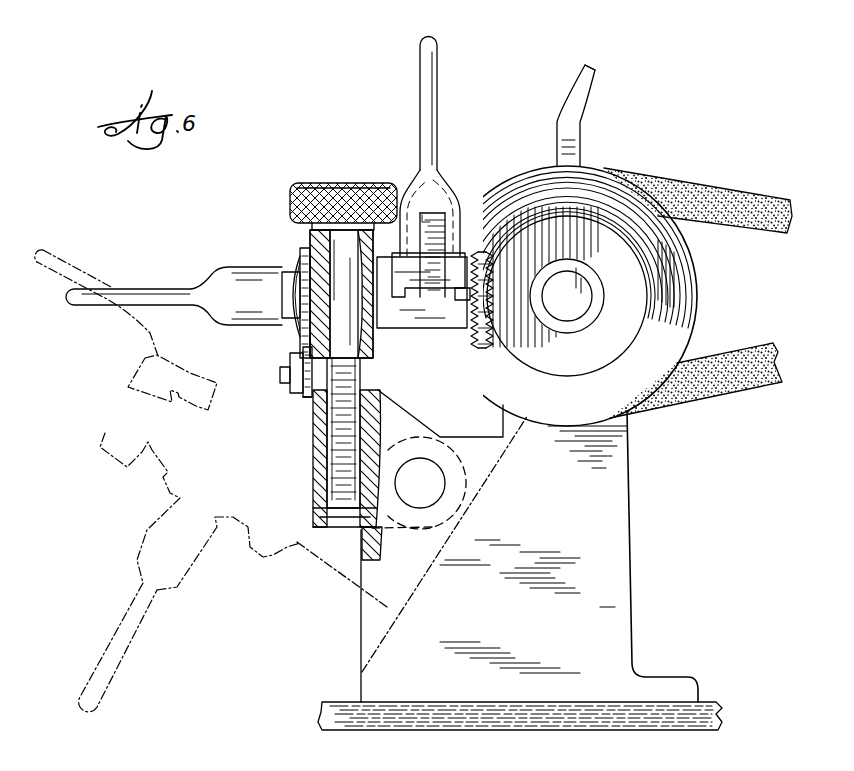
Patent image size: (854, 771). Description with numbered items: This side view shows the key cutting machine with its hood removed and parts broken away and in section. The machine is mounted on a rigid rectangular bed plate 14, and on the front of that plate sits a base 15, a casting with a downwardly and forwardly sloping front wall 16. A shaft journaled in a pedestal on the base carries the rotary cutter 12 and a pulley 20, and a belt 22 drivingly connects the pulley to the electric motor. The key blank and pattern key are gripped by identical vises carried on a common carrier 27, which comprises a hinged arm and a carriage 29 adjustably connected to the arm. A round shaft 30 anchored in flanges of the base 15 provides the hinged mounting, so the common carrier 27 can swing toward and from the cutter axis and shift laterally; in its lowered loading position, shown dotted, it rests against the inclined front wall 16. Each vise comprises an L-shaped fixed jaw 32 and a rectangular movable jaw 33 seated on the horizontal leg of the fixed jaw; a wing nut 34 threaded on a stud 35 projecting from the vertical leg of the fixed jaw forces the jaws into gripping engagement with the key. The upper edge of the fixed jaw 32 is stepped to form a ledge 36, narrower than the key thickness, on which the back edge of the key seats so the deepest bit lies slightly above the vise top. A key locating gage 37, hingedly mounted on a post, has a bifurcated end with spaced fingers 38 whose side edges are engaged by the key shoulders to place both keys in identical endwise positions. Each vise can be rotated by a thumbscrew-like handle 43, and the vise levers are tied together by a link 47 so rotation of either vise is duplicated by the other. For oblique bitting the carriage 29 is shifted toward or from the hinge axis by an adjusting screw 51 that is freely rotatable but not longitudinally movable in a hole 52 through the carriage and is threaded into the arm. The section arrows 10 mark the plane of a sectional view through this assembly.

The section line / viewing direction 10 is at (393, 23).
The rotary cutter 12 is at (482, 333).
The bed plate 14 is at (699, 714).
The base 15 is at (592, 506).
The front wall 16 is at (390, 620).
The pulley 20 is at (682, 291).
The belt 22 is at (742, 197).
The common carrier 27 is at (291, 207).
The carriage 29 is at (337, 330).
The shaft 30 is at (420, 478).
The fixed jaw 32 is at (437, 256).
The movable jaw 33 is at (448, 245).
The wing nut 34 is at (428, 78).
The stud 35 is at (412, 170).
The ledge 36 is at (462, 298).
The key locating gage 37 is at (580, 130).
The fingers 38 is at (590, 70).
The handle 43 is at (124, 292).
The link 47 is at (293, 395).
The adjusting screw 51 is at (342, 247).
The hole 52 is at (293, 362).